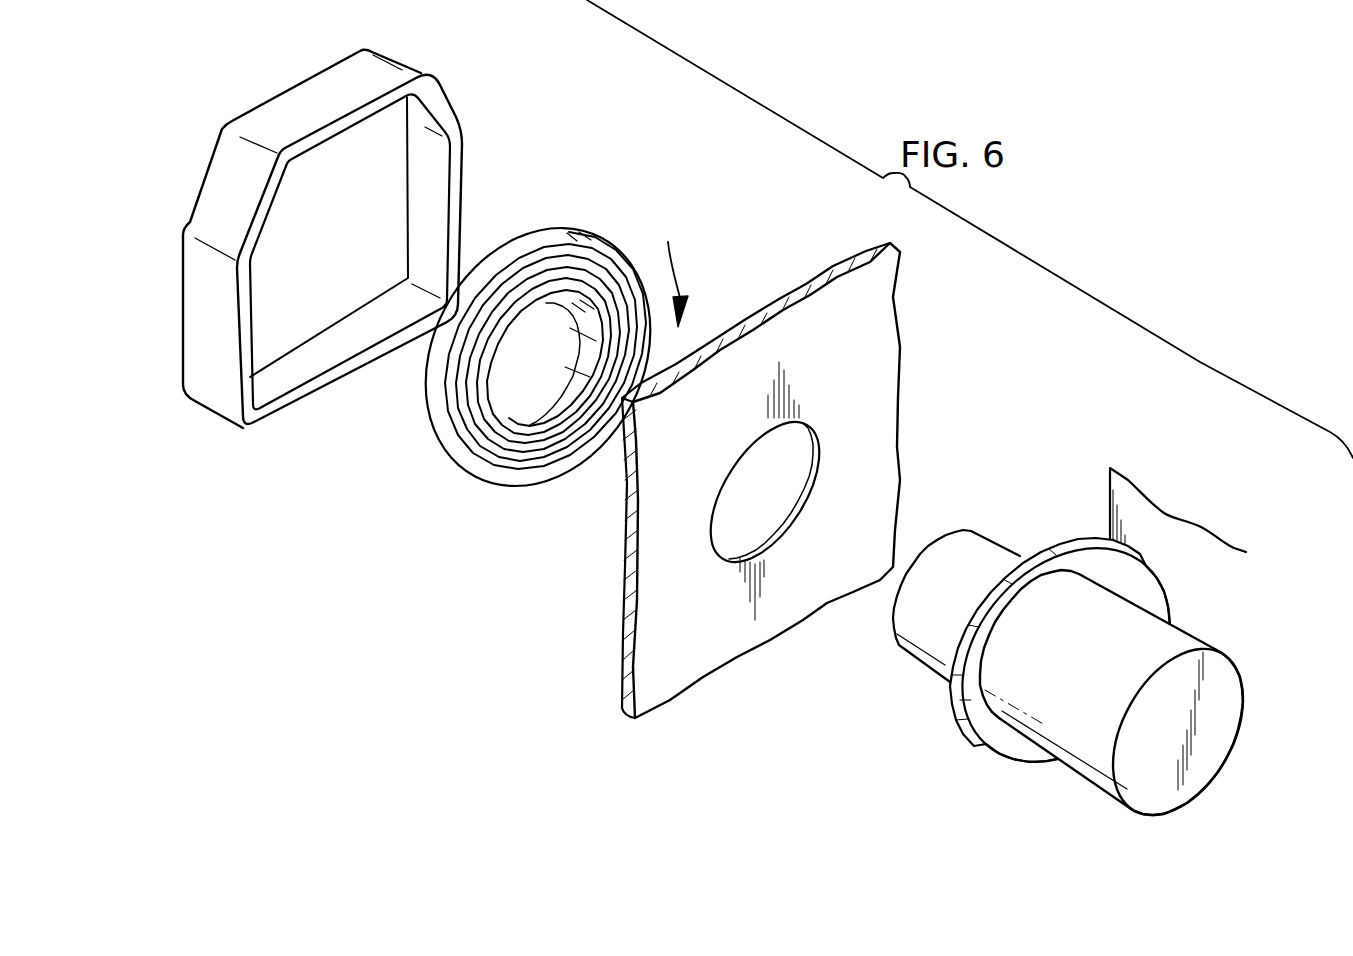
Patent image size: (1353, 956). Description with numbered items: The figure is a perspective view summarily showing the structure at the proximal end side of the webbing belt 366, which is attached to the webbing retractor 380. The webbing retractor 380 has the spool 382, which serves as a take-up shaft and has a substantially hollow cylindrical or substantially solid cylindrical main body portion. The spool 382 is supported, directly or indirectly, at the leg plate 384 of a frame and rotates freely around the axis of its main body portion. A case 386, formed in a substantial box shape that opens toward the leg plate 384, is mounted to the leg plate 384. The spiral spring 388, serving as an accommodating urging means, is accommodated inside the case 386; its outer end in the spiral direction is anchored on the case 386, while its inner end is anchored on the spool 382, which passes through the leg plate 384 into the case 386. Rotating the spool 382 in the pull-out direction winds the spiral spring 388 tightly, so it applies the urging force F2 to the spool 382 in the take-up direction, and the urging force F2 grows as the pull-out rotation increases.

The webbing belt 366 is at (1108, 498).
The webbing retractor 380 is at (682, 143).
The spool 382 is at (962, 536).
The leg plate 384 is at (887, 358).
The case 386 is at (462, 172).
The spiral spring 388 is at (578, 232).
The urging force F2 is at (680, 270).